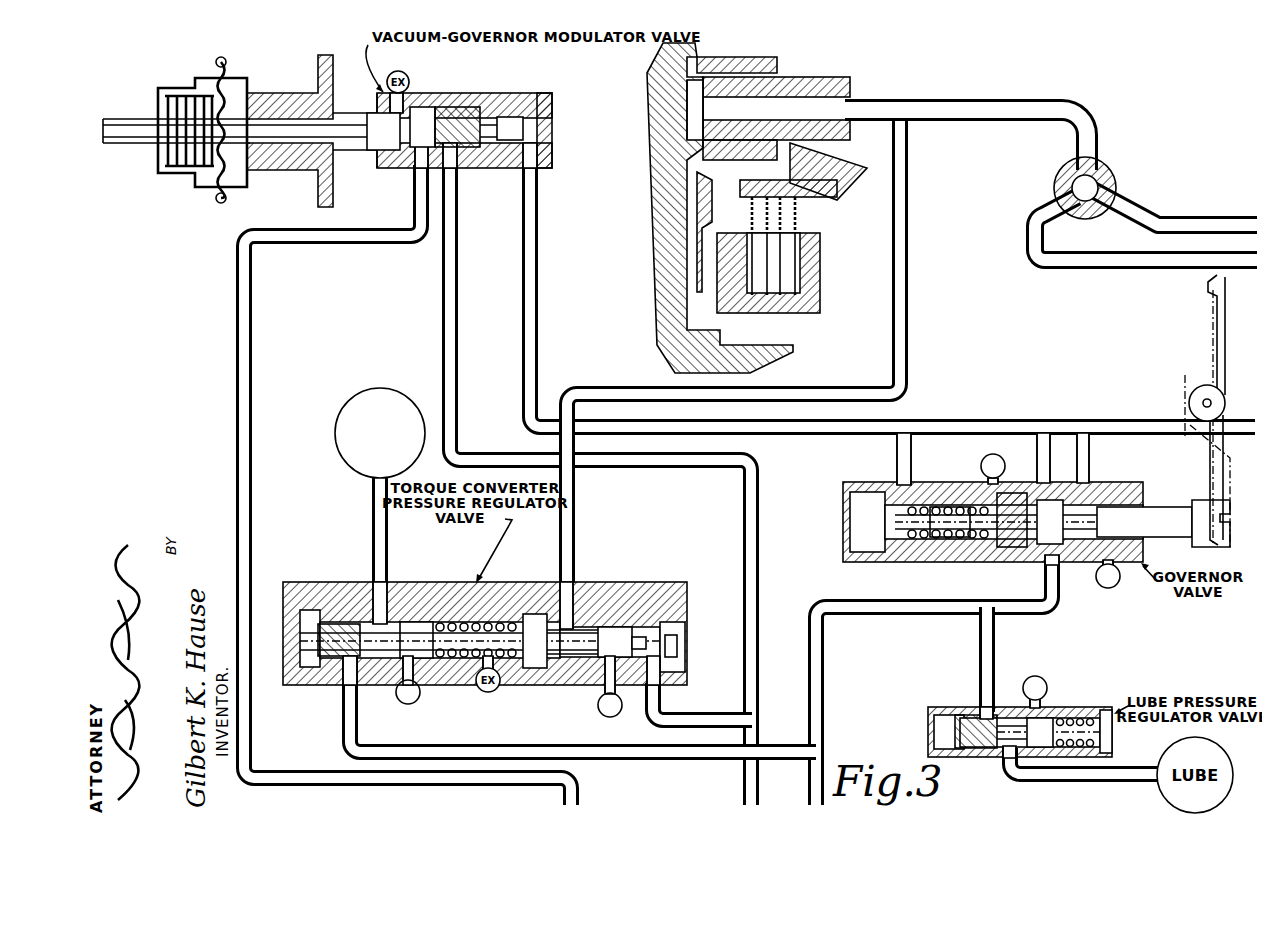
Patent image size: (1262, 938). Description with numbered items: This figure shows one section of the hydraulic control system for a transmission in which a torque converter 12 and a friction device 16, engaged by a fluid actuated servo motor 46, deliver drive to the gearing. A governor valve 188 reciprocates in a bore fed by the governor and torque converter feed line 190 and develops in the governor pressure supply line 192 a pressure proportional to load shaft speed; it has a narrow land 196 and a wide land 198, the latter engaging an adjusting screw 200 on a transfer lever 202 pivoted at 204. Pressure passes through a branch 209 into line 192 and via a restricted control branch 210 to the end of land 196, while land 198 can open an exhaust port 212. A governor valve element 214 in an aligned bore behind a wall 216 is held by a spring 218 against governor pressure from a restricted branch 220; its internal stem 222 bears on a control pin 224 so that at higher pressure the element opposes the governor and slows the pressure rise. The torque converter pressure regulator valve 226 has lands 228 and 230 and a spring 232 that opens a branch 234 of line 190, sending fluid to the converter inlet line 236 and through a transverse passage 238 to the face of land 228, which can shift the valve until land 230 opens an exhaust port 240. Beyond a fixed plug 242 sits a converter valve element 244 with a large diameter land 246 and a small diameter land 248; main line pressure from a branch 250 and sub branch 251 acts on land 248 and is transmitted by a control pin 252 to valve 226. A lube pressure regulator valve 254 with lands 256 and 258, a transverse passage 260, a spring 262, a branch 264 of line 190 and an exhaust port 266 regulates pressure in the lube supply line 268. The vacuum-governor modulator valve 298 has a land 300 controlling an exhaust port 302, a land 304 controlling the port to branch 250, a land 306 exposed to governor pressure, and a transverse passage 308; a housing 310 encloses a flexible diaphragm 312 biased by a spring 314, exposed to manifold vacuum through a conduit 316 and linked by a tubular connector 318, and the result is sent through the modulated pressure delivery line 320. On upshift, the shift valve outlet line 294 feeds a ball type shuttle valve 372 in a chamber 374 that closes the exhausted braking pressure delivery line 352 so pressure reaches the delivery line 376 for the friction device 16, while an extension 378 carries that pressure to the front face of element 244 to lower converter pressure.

The torque converter 12 is at (375, 390).
The friction device 16 is at (807, 217).
The servo motor 46 is at (652, 298).
The governor valve 188 is at (1202, 503).
The governor and torque converter feed line 190 is at (967, 601).
The governor pressure supply line 192 is at (934, 420).
The narrow land 196 is at (1050, 500).
The wide land 198 is at (1140, 515).
The adjusting screw 200 is at (1232, 528).
The transfer lever 202 is at (1212, 355).
The pivot 204 is at (1190, 392).
The branch 209 is at (1085, 482).
The restricted control branch 210 is at (1030, 455).
The exhaust port 212 is at (1117, 586).
The governor valve element 214 is at (925, 505).
The wall 216 is at (1063, 458).
The spring 218 is at (950, 505).
The restricted branch 220 is at (895, 452).
The internal stem 222 is at (922, 552).
The control pin 224 is at (1014, 547).
The torque converter pressure regulator valve 226 is at (510, 614).
The land 228 is at (340, 624).
The land 230 is at (415, 622).
The spring 232 is at (460, 658).
The branch 234 is at (357, 705).
The converter inlet line 236 is at (388, 562).
The transverse passage 238 is at (322, 685).
The exhaust port 240 is at (420, 703).
The fixed plug 242 is at (560, 680).
The converter valve element 244 is at (622, 627).
The large diameter land 246 is at (615, 627).
The small diameter land 248 is at (682, 625).
The branch 250 is at (457, 263).
The sub branch 251 is at (690, 718).
The control pin 252 is at (597, 690).
The lube pressure regulator valve 254 is at (1080, 748).
The land 256 is at (983, 757).
The land 258 is at (1045, 718).
The transverse passage 260 is at (972, 715).
The spring 262 is at (1106, 710).
The branch 264 is at (992, 667).
The exhaust port 266 is at (1046, 680).
The lube supply line 268 is at (1120, 778).
The shift valve outlet line 294 is at (1117, 258).
The vacuum-governor modulator valve 298 is at (333, 106).
The land 300 is at (380, 150).
The exhaust port 302 is at (420, 107).
The land 304 is at (458, 107).
The land 306 is at (530, 100).
The transverse passage 308 is at (508, 117).
The housing 310 is at (160, 88).
The flexible diaphragm 312 is at (228, 82).
The spring 314 is at (188, 172).
The conduit 316 is at (160, 110).
The tubular connector 318 is at (347, 168).
The modulated pressure delivery line 320 is at (421, 197).
The braking pressure delivery line 352 is at (1192, 223).
The shuttle valve 372 is at (1072, 170).
The chamber 374 is at (1100, 180).
The delivery line 376 is at (1034, 100).
The extension 378 is at (908, 290).